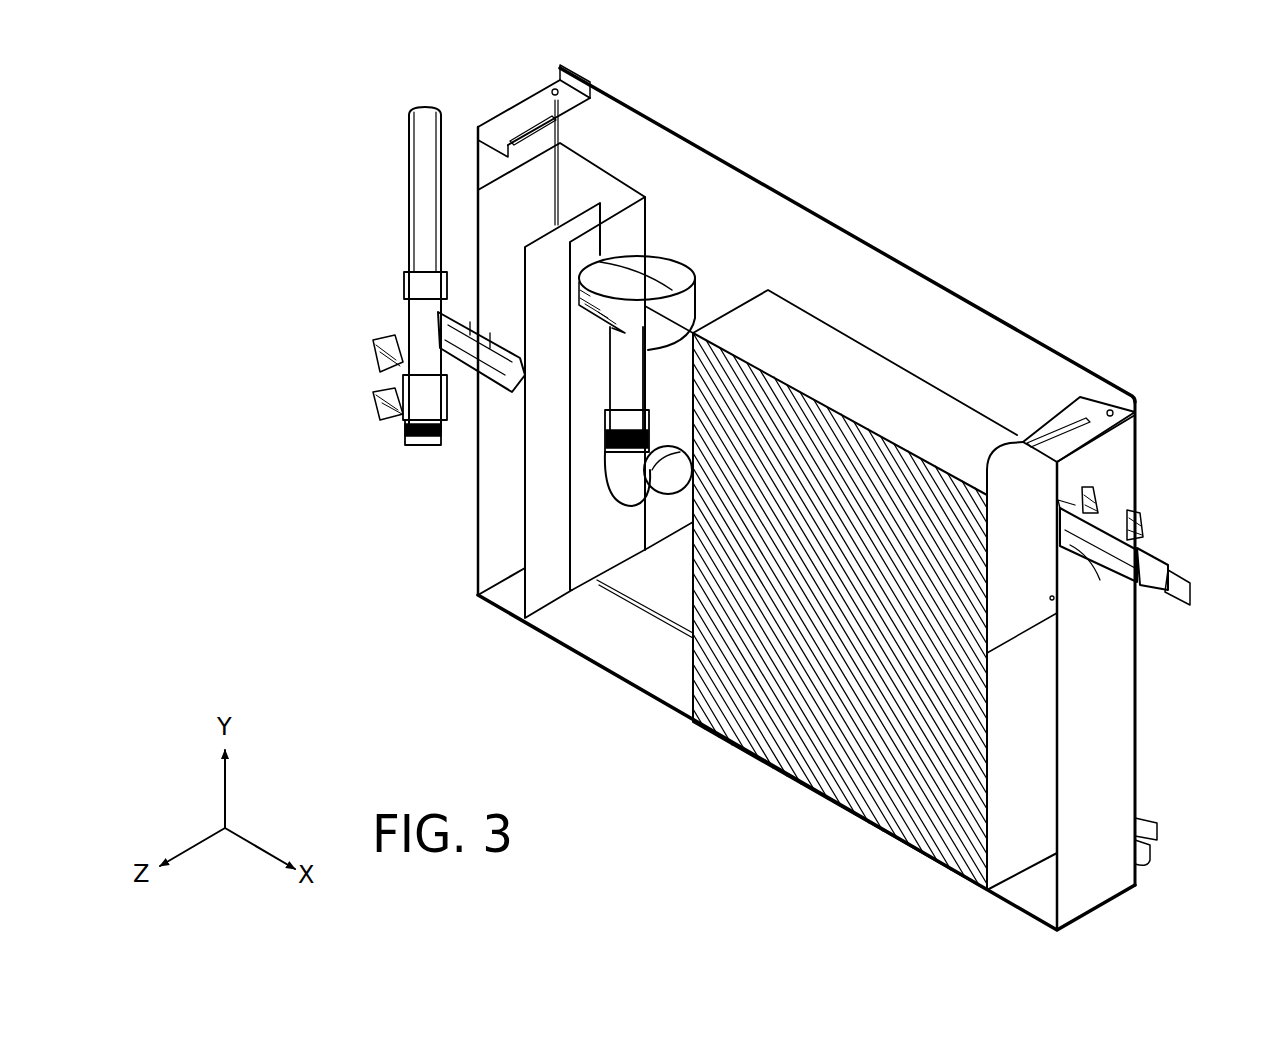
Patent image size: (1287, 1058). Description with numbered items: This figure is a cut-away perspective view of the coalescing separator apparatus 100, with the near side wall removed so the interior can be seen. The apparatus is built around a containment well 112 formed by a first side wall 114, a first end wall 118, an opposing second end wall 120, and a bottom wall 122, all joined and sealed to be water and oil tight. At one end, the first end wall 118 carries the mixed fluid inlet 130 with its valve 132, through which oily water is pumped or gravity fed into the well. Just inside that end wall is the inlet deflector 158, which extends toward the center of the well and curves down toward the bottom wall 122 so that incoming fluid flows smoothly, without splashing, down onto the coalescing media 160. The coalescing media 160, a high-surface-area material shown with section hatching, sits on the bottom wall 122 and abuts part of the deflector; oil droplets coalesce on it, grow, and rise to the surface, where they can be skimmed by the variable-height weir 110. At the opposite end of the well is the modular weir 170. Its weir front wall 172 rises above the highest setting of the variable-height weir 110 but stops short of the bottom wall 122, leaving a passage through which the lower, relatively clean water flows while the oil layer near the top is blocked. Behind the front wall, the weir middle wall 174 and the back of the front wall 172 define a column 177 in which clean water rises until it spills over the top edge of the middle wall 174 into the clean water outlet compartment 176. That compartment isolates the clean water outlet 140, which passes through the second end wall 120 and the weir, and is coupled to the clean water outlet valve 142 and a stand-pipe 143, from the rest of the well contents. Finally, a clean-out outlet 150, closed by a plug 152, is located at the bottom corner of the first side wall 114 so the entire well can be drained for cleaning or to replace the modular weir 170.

The coalescing separator apparatus 100 is at (992, 164).
The variable-height weir 110 is at (636, 222).
The containment well 112 is at (846, 287).
The first side wall 114 is at (953, 297).
The first end wall 118 is at (1127, 735).
The second end wall 120 is at (577, 177).
The bottom wall 122 is at (627, 685).
The mixed fluid inlet 130 is at (1073, 562).
The valve 132 is at (1138, 513).
The clean water outlet 140 is at (430, 263).
The clean water outlet valve 142 is at (395, 378).
The stand-pipe 143 is at (402, 148).
The clean-out outlet 150 is at (1147, 858).
The plug 152 is at (1160, 822).
The inlet deflector 158 is at (1037, 413).
The coalescing media 160 is at (828, 757).
The modular weir 170 is at (548, 142).
The weir front wall 172 is at (671, 250).
The weir middle wall 174 is at (542, 478).
The clean water outlet compartment 176 is at (490, 442).
The column 177 is at (540, 538).